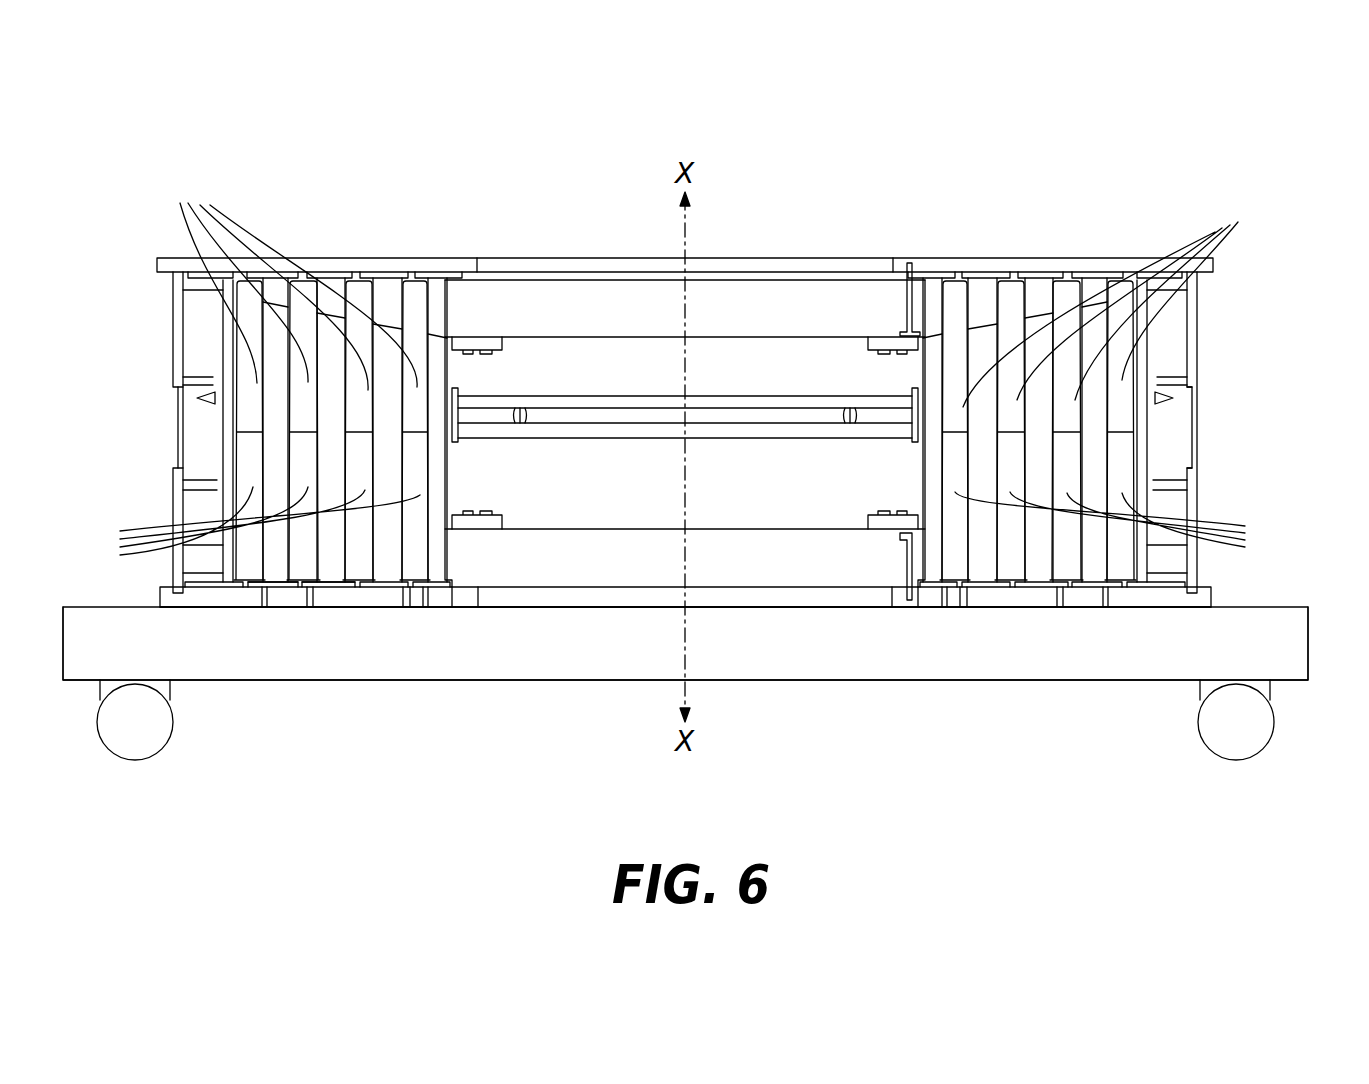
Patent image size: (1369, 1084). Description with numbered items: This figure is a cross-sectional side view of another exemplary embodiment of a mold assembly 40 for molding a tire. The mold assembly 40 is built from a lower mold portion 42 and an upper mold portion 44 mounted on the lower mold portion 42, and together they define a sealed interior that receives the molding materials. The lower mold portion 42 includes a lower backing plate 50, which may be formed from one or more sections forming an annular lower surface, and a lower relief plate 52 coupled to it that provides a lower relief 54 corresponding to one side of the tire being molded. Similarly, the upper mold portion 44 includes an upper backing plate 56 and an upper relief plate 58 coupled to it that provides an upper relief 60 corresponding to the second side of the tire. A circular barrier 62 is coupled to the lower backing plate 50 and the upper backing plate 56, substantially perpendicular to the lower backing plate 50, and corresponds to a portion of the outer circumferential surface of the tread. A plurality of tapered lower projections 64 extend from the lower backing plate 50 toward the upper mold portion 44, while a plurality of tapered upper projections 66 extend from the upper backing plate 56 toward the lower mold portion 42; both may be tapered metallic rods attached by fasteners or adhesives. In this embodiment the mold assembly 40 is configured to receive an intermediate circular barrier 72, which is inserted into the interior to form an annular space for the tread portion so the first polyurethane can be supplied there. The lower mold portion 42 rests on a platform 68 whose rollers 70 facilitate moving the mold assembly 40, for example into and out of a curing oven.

The mold assembly 40 is at (1170, 172).
The lower mold portion 42 is at (142, 508).
The upper mold portion 44 is at (153, 322).
The lower backing plate 50 is at (375, 597).
The lower relief plate 52 is at (333, 565).
The lower relief 54 is at (322, 540).
The upper backing plate 56 is at (462, 270).
The upper relief plate 58 is at (358, 325).
The upper relief 60 is at (352, 330).
The circular barrier 62 is at (180, 428).
The lower projections 64 is at (687, 538).
The upper projections 66 is at (710, 290).
The platform 68 is at (80, 663).
The rollers 70 is at (143, 737).
The intermediate circular barrier 72 is at (220, 348).